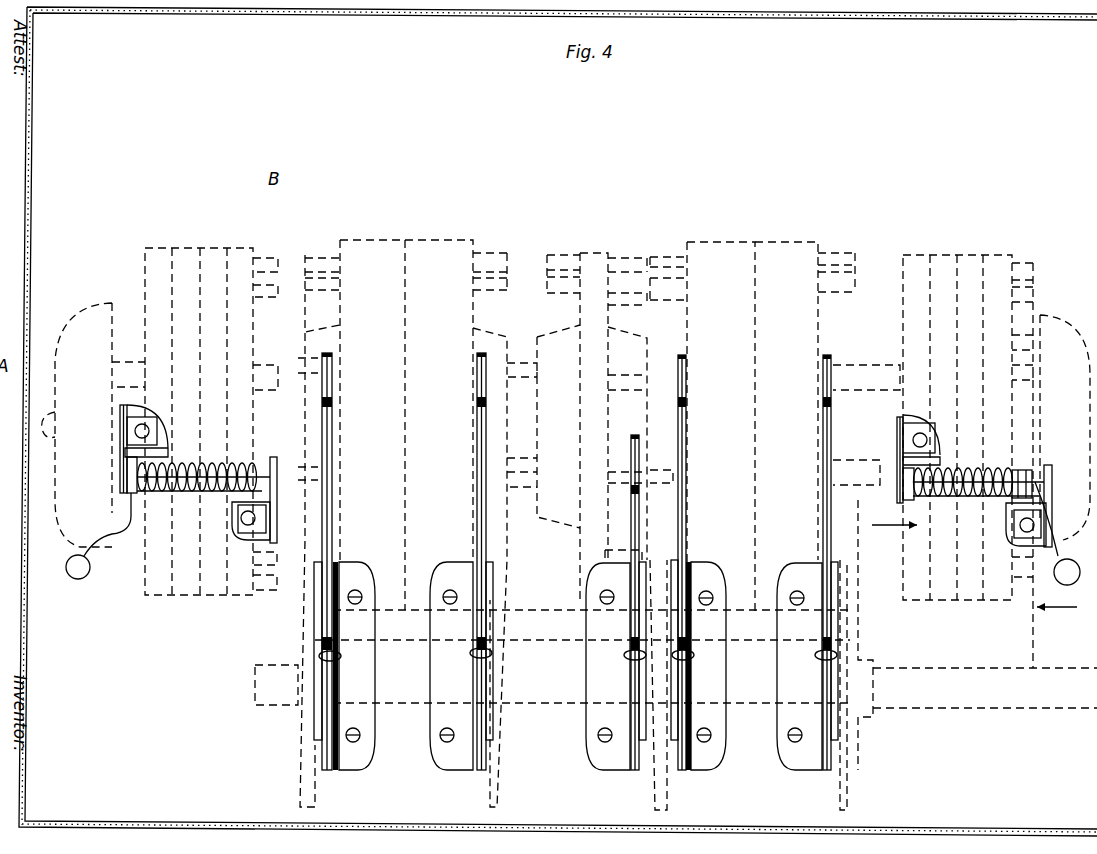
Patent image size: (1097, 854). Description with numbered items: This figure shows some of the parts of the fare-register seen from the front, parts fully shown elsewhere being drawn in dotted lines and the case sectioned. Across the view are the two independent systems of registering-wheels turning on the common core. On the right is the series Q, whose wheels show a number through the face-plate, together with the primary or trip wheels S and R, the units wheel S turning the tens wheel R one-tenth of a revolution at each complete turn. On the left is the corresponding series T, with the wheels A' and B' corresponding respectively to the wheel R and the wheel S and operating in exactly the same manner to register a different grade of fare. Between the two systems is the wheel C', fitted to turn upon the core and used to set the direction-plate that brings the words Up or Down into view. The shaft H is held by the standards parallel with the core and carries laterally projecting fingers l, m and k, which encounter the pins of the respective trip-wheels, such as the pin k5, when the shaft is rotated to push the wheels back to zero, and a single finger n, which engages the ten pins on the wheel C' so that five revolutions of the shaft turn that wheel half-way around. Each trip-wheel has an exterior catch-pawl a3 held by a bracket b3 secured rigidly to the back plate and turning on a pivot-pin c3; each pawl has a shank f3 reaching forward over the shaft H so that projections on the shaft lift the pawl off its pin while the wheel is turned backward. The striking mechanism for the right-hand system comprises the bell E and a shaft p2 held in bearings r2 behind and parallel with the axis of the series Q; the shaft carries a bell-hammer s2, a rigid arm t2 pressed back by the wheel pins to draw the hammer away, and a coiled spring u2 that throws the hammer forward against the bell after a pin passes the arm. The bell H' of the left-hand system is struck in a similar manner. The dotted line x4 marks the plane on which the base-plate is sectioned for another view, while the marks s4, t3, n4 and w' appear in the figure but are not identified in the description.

The series of registering-wheels T is at (195, 411).
The bell H' is at (77, 425).
The bearings r2 is at (132, 418).
The rigid arm t2 is at (272, 460).
The shaft p2 is at (195, 466).
The spring u2 is at (960, 498).
The bell-hammer s2 is at (579, 533).
The pin k5 is at (319, 520).
The trip wheel A' is at (372, 415).
The trip wheel B' is at (439, 390).
The profile s4 is at (526, 519).
The lug t3 is at (561, 281).
The wheel C' is at (626, 518).
The lug n4 is at (682, 275).
The primary trip wheel R is at (721, 414).
The primary trip wheel S is at (827, 388).
The series of registering-wheels Q is at (968, 448).
The bell E is at (1065, 427).
The shaft H is at (564, 655).
The dotted section line x4 is at (984, 614).
The lugs w' is at (953, 619).
The catch-pawl a3 is at (327, 454).
The shank f3 is at (822, 628).
The bracket b3 is at (580, 666).
The pivot-pin c3 is at (815, 655).
The finger k is at (677, 797).
The finger m is at (278, 775).
The finger l is at (509, 768).
The finger n is at (570, 609).